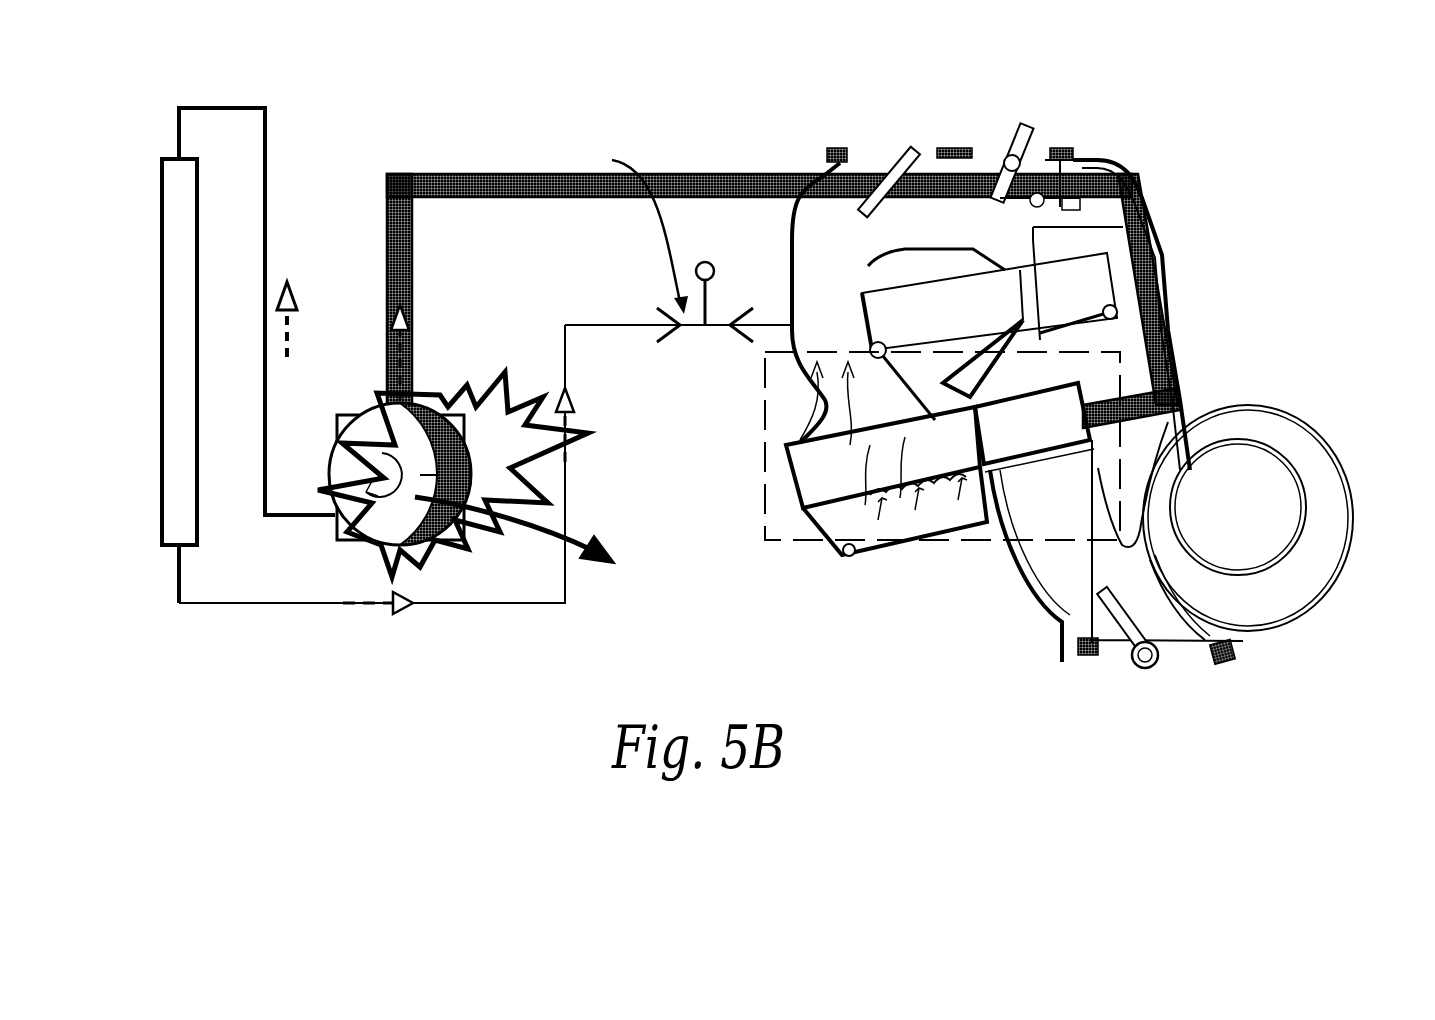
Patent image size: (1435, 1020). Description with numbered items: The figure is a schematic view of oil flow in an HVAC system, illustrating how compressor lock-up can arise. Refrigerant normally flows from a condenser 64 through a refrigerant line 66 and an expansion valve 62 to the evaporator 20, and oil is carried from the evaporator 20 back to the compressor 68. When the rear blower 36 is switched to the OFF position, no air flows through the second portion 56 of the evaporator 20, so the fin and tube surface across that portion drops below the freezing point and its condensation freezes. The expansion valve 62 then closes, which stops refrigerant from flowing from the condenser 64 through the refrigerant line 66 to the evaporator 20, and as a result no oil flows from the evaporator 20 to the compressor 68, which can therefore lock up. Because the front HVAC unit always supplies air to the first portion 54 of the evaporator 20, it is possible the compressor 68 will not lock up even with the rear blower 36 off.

The evaporator 20 is at (1060, 365).
The rear blower 36 is at (1296, 548).
The first portion of the evaporator 54 is at (816, 473).
The second portion of the evaporator 56 is at (1057, 420).
The expansion valve 62 is at (731, 322).
The condenser 64 is at (160, 352).
The refrigerant line 66 is at (343, 606).
The compressor 68 is at (463, 540).